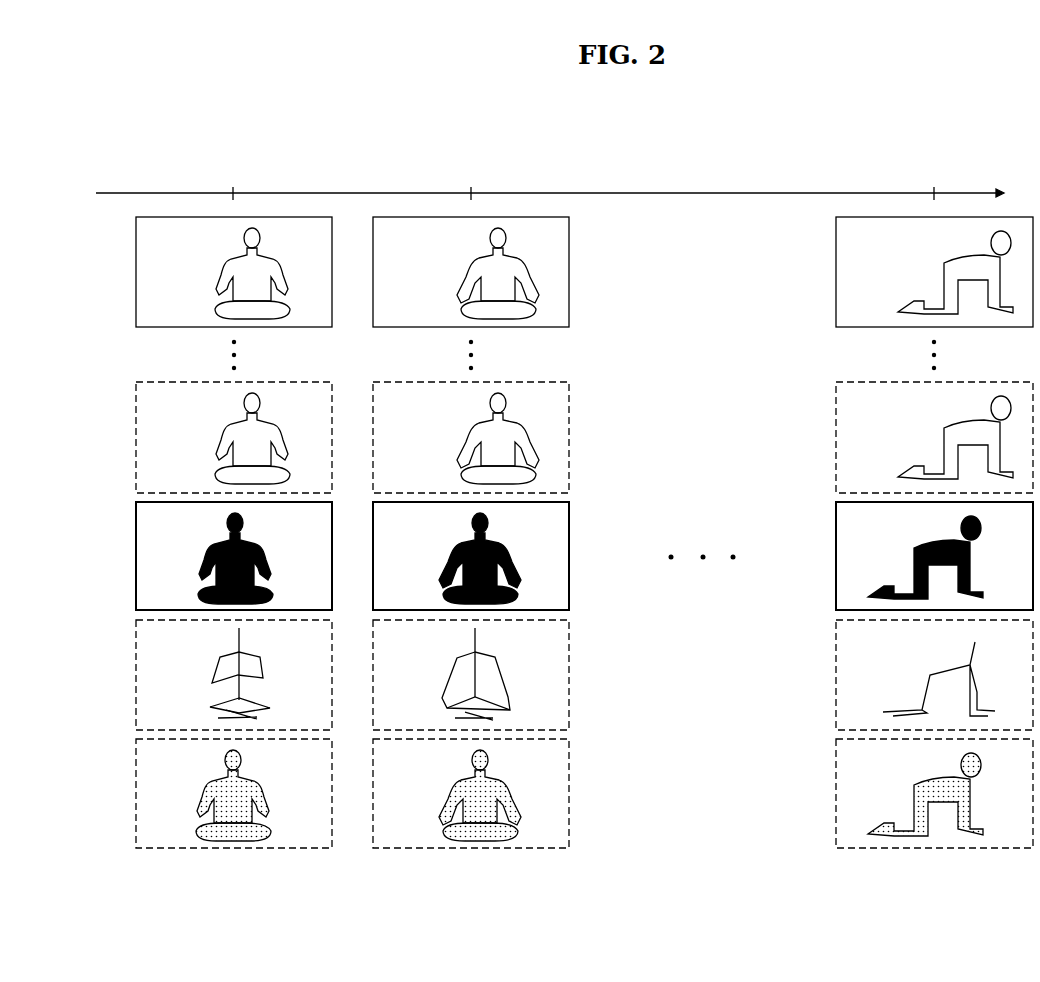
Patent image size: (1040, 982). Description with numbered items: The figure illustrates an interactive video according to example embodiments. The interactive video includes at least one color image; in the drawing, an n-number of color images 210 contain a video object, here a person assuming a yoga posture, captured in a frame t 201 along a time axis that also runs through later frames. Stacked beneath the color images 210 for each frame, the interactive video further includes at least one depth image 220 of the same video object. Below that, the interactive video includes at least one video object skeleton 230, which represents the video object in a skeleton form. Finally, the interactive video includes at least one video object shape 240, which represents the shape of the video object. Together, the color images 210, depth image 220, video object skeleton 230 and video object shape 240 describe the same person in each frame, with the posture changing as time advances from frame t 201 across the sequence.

The frame t 201 is at (225, 173).
The color images 210 is at (118, 217).
The depth image 220 is at (118, 502).
The video object skeleton 230 is at (118, 620).
The video object shape 240 is at (118, 739).